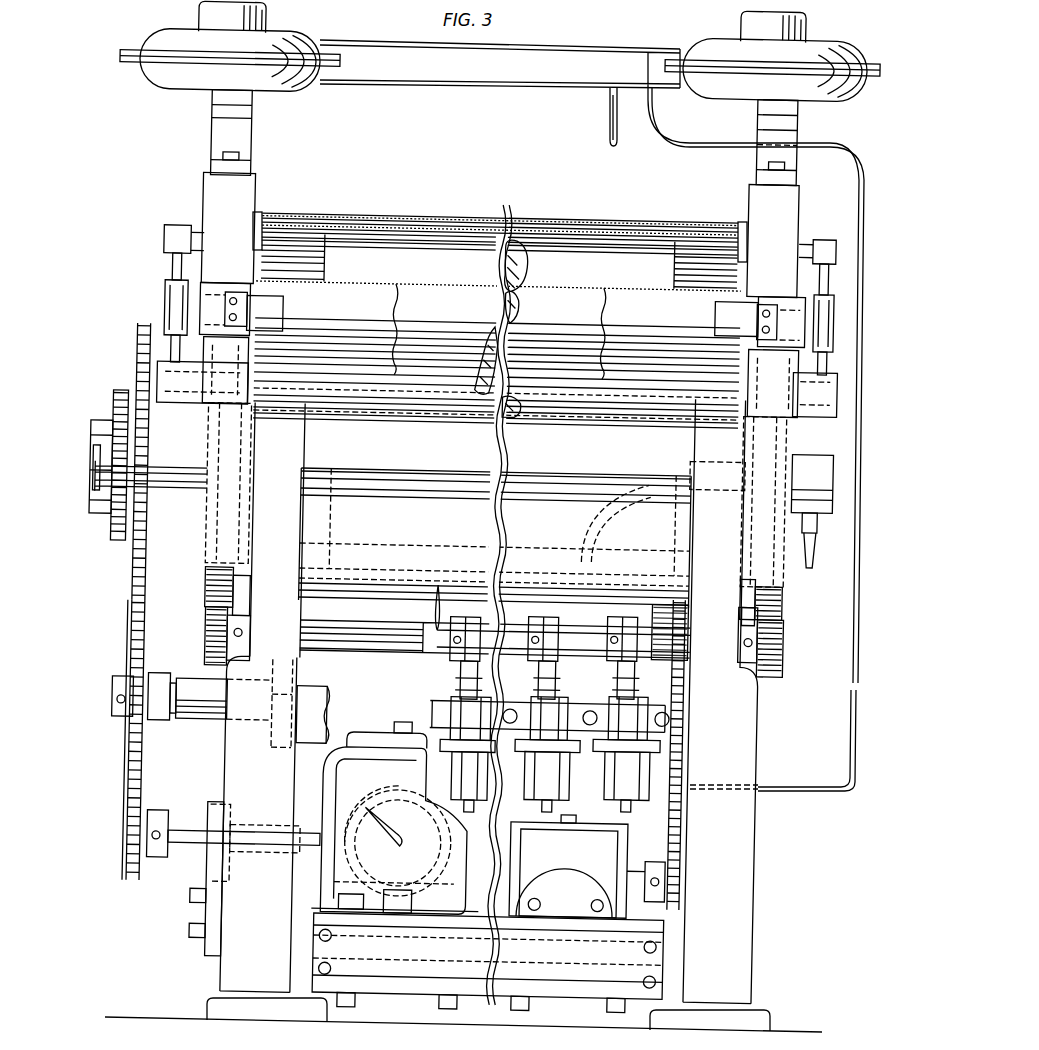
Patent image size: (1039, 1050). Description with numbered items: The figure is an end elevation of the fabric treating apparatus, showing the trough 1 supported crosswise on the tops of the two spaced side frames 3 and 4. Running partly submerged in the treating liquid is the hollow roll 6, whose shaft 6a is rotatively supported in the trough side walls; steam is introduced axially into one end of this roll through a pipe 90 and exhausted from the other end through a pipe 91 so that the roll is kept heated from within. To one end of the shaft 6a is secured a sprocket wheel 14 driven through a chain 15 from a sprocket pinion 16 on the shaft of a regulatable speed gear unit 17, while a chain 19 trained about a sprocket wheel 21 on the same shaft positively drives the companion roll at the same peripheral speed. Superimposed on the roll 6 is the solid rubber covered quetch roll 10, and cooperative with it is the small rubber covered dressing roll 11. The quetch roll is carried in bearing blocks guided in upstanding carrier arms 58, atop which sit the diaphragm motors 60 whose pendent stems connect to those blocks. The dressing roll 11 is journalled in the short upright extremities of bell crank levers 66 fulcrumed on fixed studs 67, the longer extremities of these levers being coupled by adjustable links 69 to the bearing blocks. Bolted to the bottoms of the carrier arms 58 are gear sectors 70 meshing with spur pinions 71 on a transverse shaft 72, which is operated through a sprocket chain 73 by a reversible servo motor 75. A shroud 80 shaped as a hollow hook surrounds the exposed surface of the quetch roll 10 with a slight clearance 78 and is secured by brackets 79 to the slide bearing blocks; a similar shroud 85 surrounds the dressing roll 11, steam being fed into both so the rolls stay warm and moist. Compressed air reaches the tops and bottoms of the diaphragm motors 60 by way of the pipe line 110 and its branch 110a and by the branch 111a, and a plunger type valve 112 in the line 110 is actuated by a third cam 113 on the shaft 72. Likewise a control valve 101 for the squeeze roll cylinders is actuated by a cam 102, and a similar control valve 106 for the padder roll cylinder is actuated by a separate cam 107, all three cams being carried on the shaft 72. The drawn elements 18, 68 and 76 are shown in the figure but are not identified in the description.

The trough 1 is at (437, 600).
The side frame 3 is at (227, 747).
The side frame 4 is at (758, 826).
The second roll 6 is at (545, 396).
The shaft 6a is at (182, 485).
The quetch roll 10 is at (512, 240).
The dressing roll 11 is at (500, 300).
The sprocket wheel 14 is at (150, 552).
The chain 15 is at (135, 637).
The sprocket pinion 16 is at (150, 812).
The regulatable speed gear unit 17 is at (376, 732).
The base 18 is at (403, 983).
The chain 19 is at (103, 505).
The sprocket wheel 21 is at (110, 545).
The carrier arm 58 is at (185, 140).
The diaphragm motor 60 is at (160, 38).
The bell crank lever 66 is at (228, 284).
The fixed stud 67 is at (183, 403).
The bearing housing 68 is at (240, 355).
The adjustable link 69 is at (163, 292).
The gear sector 70 is at (205, 597).
The spur pinion 71 is at (205, 632).
The transverse shaft 72 is at (375, 648).
The sprocket chain 73 is at (686, 757).
The reversible servo motor 75 is at (587, 866).
The manifold 76 is at (492, 780).
The clearance 78 is at (440, 212).
The bracket 79 is at (262, 216).
The shroud 80 is at (394, 212).
The shroud 85 is at (362, 282).
The pipe 90 is at (424, 466).
The pipe 91 is at (610, 500).
The control valve 101 is at (467, 754).
The cam 102 is at (470, 645).
The control valve 106 is at (547, 754).
The cam 107 is at (548, 645).
The pipe line 110 is at (850, 720).
The branch 110a is at (500, 64).
The branch 111a is at (470, 88).
The plunger type valve 112 is at (626, 754).
The cam 113 is at (628, 652).